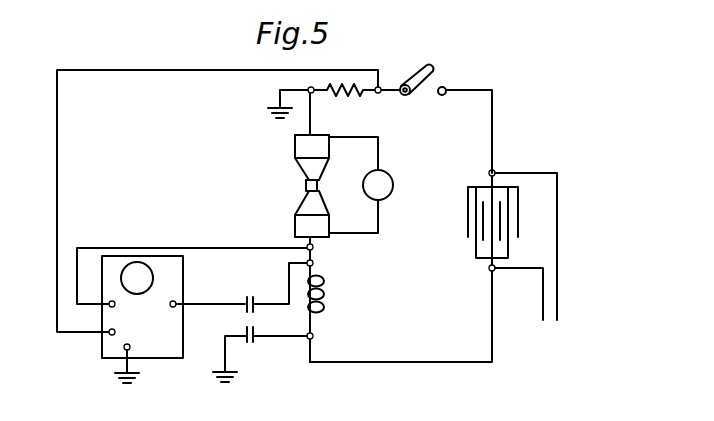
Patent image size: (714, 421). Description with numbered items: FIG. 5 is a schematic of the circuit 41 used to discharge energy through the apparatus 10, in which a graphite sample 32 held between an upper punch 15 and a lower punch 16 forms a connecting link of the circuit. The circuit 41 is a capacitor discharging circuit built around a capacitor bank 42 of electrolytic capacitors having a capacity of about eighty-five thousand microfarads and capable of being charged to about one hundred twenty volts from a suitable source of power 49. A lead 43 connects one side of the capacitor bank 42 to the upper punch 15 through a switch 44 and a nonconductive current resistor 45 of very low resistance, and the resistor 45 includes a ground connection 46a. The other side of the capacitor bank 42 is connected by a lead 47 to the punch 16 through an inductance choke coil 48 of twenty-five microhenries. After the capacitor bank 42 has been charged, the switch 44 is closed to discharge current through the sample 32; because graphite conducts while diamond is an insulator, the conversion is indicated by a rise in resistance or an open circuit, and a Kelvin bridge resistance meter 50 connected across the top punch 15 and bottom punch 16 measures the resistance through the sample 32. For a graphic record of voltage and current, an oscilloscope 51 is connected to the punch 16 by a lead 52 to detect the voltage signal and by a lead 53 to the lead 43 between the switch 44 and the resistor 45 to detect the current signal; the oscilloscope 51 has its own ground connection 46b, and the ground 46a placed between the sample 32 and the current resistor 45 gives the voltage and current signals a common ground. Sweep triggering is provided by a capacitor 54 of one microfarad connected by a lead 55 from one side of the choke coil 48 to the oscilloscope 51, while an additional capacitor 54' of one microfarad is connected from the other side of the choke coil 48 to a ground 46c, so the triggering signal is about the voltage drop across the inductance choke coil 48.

The apparatus 10 is at (296, 190).
The upper punch 15 is at (294, 150).
The punch 16 is at (294, 224).
The sample 32 is at (318, 185).
The circuit 41 is at (566, 149).
The capacitor bank 42 is at (467, 220).
The lead 43 is at (493, 118).
The switch 44 is at (433, 75).
The current resistor 45 is at (343, 97).
The ground connection 46a is at (272, 114).
The ground connection 46b is at (118, 376).
The ground 46c is at (216, 372).
The lead 47 is at (437, 363).
The inductance choke coil 48 is at (325, 299).
The source of power 49 is at (526, 262).
The Kelvin bridge resistance meter 50 is at (389, 178).
The oscilloscope 51 is at (183, 262).
The lead 52 is at (160, 248).
The lead 53 is at (58, 190).
The capacitor 54 is at (273, 287).
The capacitor 54' is at (266, 349).
The lead 55 is at (212, 304).